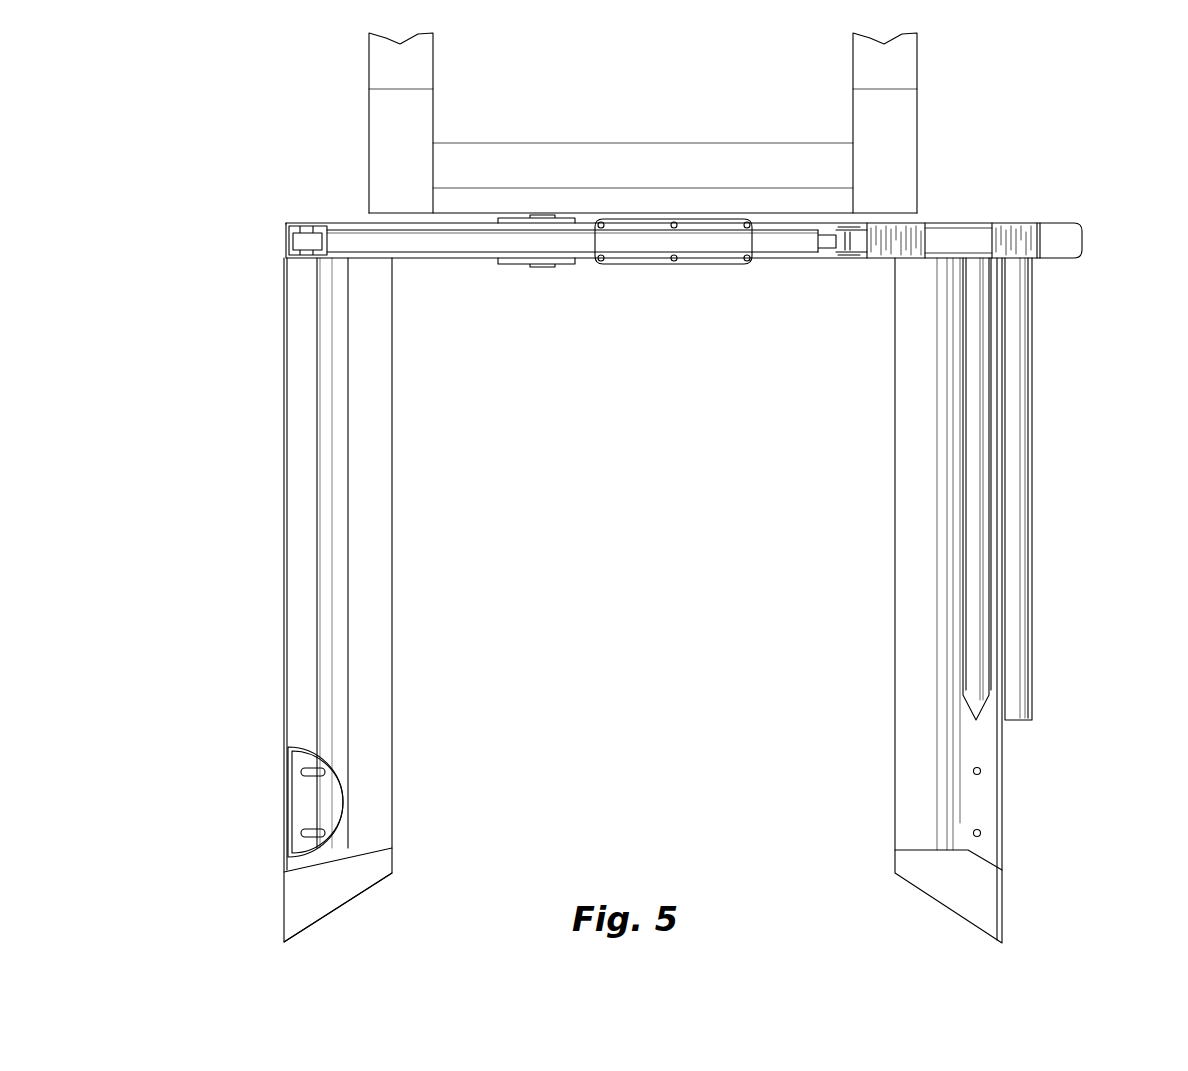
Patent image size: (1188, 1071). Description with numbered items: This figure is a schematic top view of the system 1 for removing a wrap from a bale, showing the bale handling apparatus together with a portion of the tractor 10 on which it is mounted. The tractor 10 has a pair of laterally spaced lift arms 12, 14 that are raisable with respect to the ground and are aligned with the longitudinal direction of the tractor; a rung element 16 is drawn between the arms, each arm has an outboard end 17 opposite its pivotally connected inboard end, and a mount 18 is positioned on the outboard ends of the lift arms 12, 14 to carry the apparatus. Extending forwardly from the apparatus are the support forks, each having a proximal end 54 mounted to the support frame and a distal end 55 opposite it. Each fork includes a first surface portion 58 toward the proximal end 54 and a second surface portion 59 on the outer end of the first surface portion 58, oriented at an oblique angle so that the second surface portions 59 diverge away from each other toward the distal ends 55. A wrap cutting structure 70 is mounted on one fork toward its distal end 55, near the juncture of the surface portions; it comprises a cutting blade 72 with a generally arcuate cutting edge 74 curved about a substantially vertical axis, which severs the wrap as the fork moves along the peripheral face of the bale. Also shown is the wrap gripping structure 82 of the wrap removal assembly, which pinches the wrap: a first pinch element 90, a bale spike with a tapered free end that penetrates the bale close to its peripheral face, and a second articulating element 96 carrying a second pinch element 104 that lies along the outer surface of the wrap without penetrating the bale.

The system 1 is at (999, 102).
The tractor 10 is at (324, 77).
The lift arm 12 is at (397, 107).
The lift arm 14 is at (888, 103).
The ladder rung 16 is at (412, 63).
The outboard end 17 is at (393, 204).
The mount 18 is at (882, 218).
The proximal end 54 is at (270, 299).
The distal end 55 is at (382, 904).
The first surface portion 58 is at (372, 694).
The second surface portion 59 is at (312, 900).
The wrap cutting structure 70 is at (270, 789).
The cutting blade 72 is at (313, 810).
The cutting edge 74 is at (338, 784).
The wrap gripping structure 82 is at (1065, 659).
The first pinch element 90 is at (973, 421).
The second articulating element 96 is at (443, 238).
The second pinch element 104 is at (1013, 472).